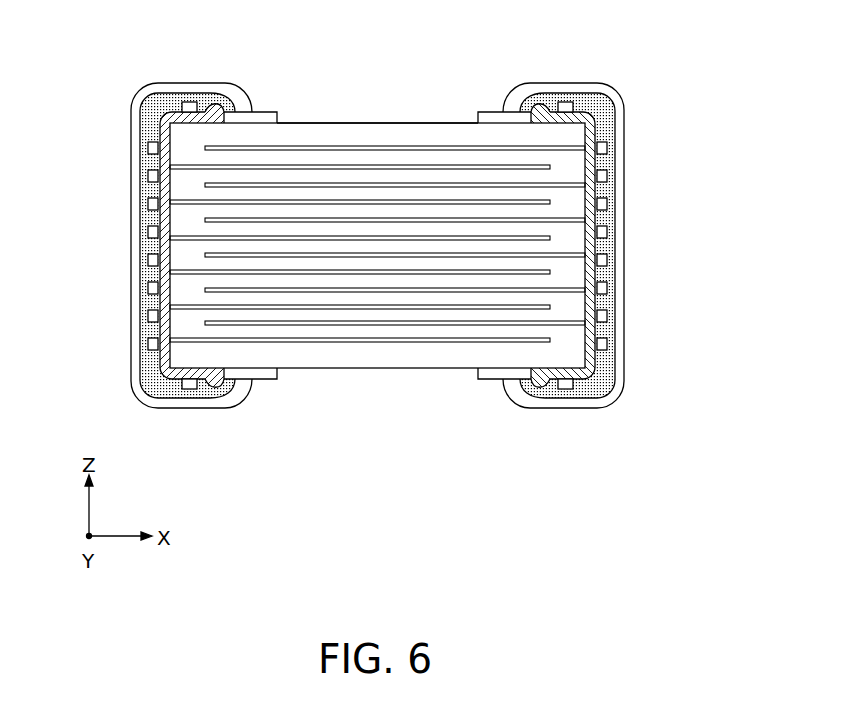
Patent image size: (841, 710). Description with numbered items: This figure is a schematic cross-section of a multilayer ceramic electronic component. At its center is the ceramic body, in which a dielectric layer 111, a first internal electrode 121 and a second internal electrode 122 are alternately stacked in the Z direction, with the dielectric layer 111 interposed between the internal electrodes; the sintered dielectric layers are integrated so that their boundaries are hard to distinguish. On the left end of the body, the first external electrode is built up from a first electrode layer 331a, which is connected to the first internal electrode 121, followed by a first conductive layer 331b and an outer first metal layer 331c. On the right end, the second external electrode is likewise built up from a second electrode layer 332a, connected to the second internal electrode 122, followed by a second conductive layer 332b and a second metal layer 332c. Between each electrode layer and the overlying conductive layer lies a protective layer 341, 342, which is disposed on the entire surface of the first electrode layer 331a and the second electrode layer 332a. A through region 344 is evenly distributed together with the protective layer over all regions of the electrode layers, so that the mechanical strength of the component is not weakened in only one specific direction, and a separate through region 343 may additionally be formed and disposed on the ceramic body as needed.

The dielectric layer 111 is at (363, 278).
The first internal electrode 121 is at (500, 165).
The second internal electrode 122 is at (231, 152).
The first electrode layer 331a is at (163, 137).
The first conductive layer 331b is at (147, 180).
The first metal layer 331c is at (135, 240).
The second electrode layer 332a is at (592, 134).
The second conductive layer 332b is at (610, 162).
The second metal layer 332c is at (622, 207).
The protective layer 341 is at (153, 292).
The protective layer 342 is at (602, 262).
The through region 343 is at (386, 114).
The through region 344 is at (153, 330).